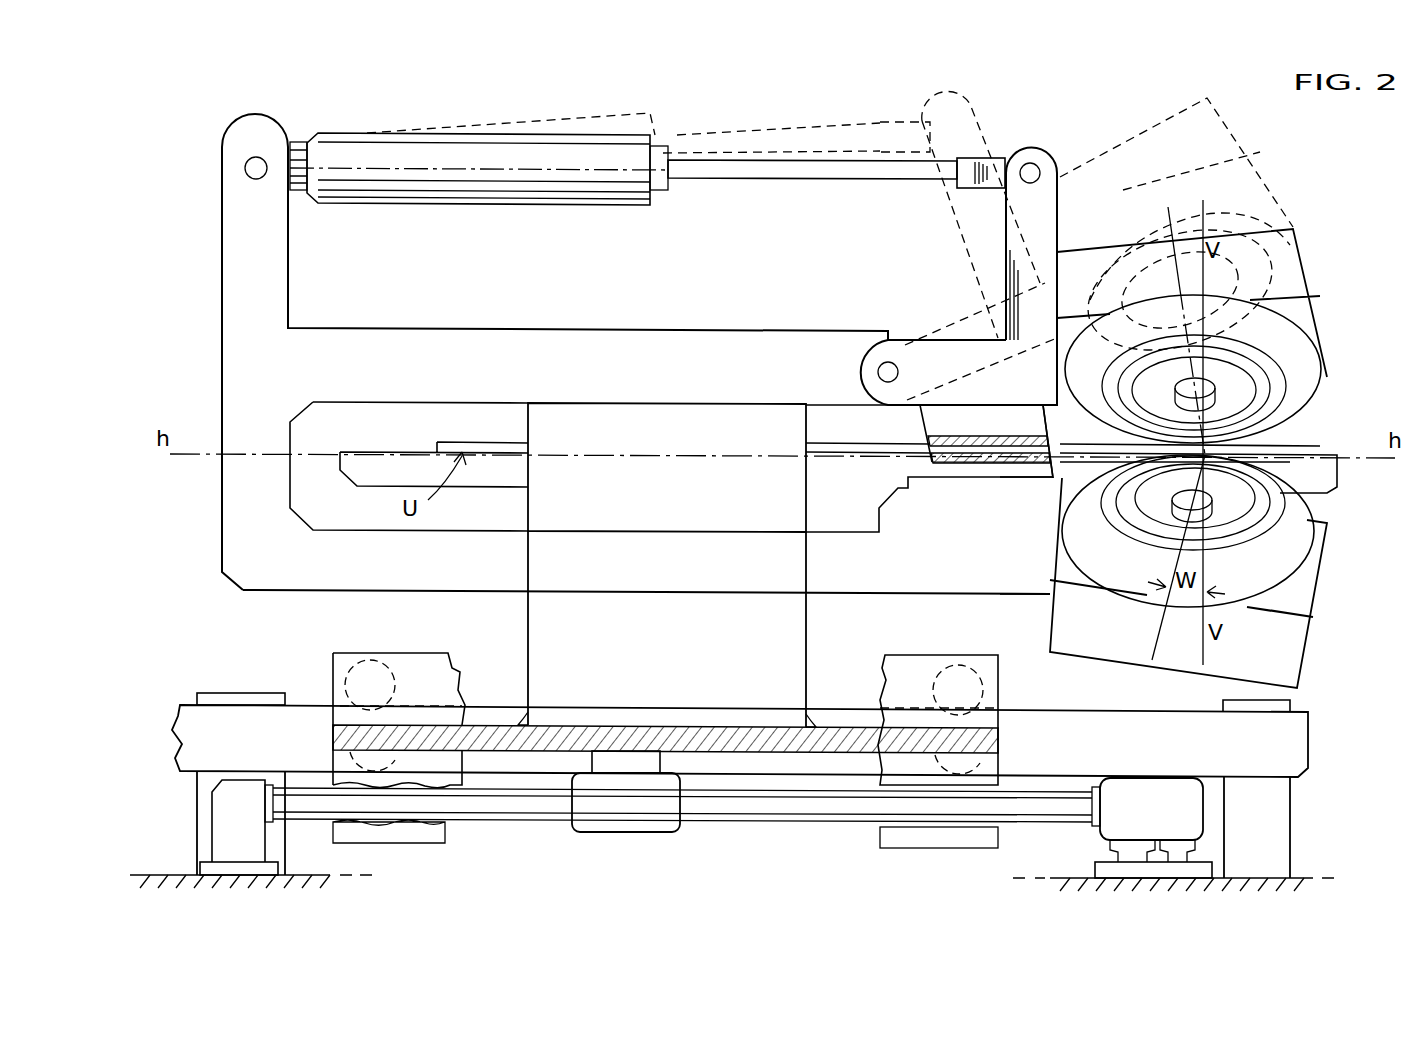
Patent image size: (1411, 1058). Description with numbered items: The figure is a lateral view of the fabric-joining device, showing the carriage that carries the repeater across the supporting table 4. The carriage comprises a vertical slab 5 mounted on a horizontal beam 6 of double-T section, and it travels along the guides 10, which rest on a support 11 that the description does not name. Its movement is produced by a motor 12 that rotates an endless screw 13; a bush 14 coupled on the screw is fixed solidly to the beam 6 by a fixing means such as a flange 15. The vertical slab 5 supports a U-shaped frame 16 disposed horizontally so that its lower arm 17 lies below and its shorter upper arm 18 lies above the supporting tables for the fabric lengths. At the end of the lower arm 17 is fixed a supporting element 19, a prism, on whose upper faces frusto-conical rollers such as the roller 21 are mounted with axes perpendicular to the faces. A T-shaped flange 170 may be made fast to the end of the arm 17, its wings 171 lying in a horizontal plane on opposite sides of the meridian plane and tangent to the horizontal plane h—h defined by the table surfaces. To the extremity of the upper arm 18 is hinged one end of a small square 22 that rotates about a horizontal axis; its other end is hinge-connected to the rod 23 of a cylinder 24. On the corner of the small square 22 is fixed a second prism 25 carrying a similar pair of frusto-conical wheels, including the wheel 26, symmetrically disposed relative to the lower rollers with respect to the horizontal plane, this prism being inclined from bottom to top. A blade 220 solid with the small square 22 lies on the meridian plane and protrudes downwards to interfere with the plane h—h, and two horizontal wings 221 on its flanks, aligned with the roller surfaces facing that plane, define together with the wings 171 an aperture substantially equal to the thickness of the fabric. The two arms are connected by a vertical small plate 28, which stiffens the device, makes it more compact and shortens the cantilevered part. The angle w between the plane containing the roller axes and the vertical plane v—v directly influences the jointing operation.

The supporting table 4 is at (382, 466).
The vertical slab 5 is at (790, 612).
The horizontal beam 6 is at (832, 742).
The guides 10 is at (1290, 728).
The leg 11 is at (1280, 829).
The motor 12 is at (1130, 792).
The endless screw 13 is at (493, 803).
The bush 14 is at (613, 808).
The flange 15 is at (622, 765).
The U-shaped frame 16 is at (240, 538).
The lower arm 17 is at (476, 570).
The upper arm 18 is at (370, 352).
The supporting element 19 is at (1050, 603).
The frusto-conical roller 21 is at (1122, 548).
The small square 22 is at (953, 397).
The rod 23 is at (760, 165).
The cylinder 24 is at (480, 172).
The prism 25 is at (1320, 302).
The frusto-conical wheel 26 is at (1310, 354).
The vertical small plate 28 is at (656, 432).
The T-shaped flange 170 is at (933, 468).
The wings 171 is at (1003, 466).
The blade 220 is at (898, 420).
The horizontal wings 221 is at (1008, 437).